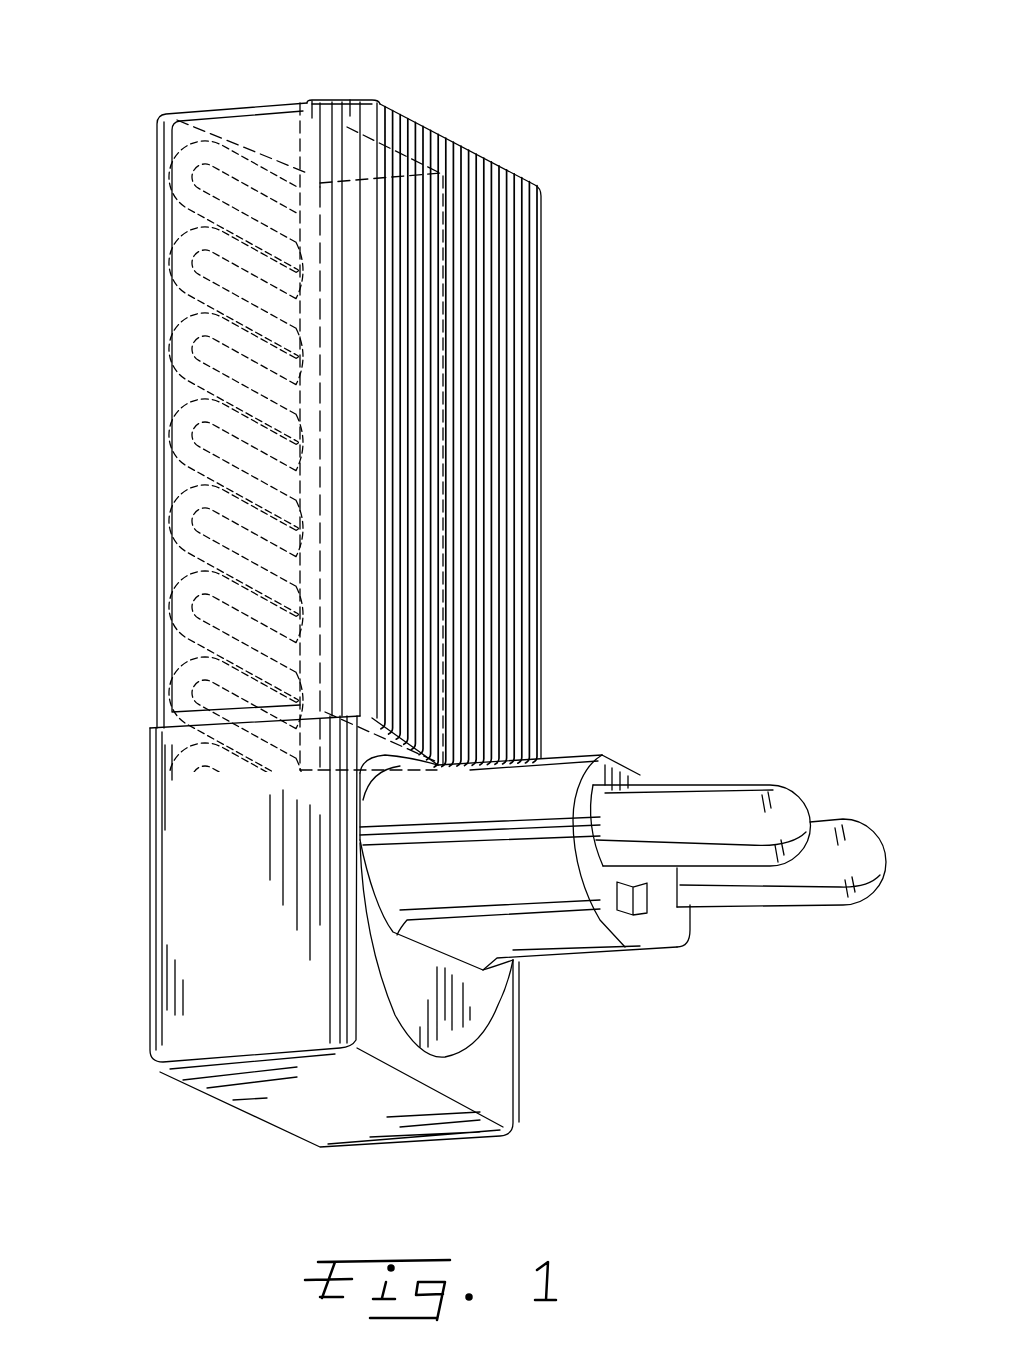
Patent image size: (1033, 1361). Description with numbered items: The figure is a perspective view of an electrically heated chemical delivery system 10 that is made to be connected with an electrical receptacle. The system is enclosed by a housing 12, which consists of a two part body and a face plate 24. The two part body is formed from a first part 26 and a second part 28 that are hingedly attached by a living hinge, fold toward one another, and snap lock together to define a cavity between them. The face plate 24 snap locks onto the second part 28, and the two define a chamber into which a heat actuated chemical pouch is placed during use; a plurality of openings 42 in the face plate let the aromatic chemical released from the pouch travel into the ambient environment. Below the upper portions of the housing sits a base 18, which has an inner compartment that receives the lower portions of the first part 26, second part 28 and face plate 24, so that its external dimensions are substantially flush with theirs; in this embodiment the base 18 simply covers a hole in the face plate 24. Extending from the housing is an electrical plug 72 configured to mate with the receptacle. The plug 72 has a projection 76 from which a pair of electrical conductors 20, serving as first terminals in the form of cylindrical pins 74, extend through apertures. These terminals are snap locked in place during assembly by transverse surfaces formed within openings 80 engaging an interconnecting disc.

The electrically heated chemical delivery system 10 is at (637, 406).
The housing 12 is at (328, 98).
The base 18 is at (157, 905).
The electrical conductors 20 is at (829, 794).
The face plate 24 is at (198, 110).
The first part 26 is at (493, 157).
The second part 28 is at (347, 110).
The openings 42 is at (236, 506).
The electrical plug 72 is at (470, 1020).
The cylindrical pins 74 is at (827, 880).
The projection 76 is at (573, 757).
The openings 80 is at (627, 903).